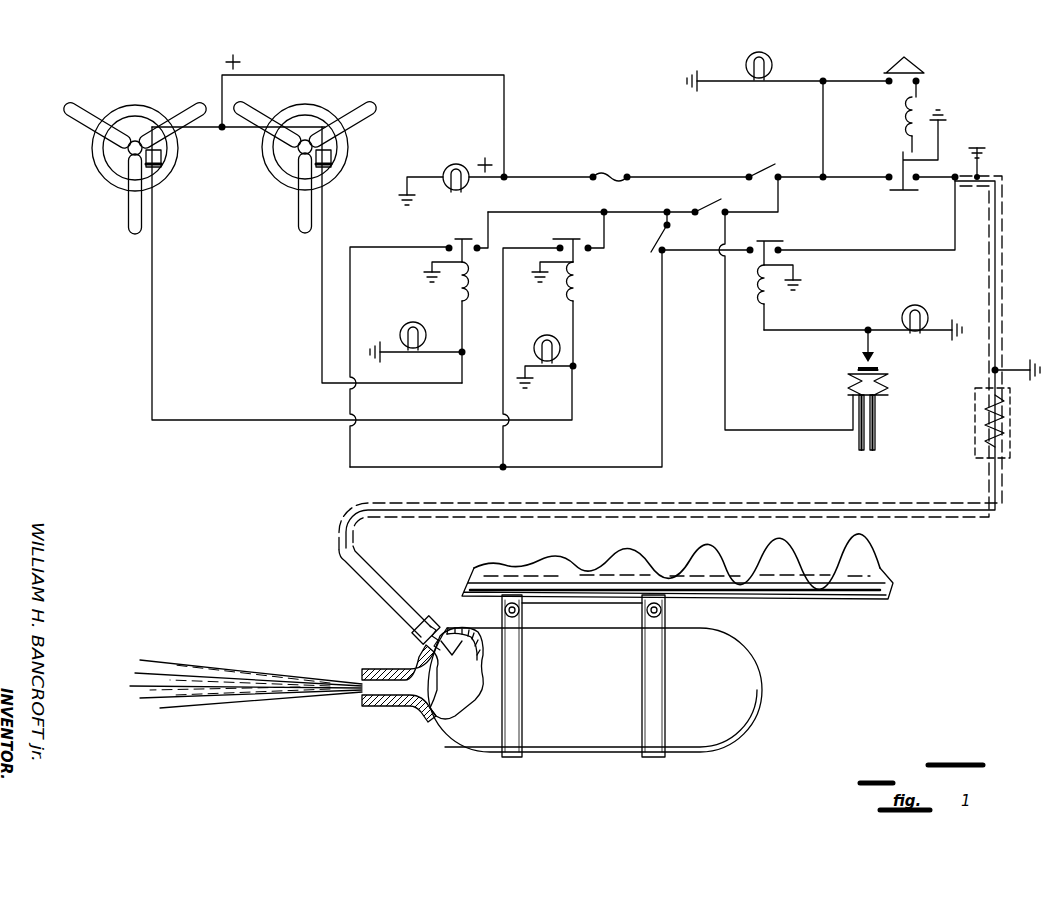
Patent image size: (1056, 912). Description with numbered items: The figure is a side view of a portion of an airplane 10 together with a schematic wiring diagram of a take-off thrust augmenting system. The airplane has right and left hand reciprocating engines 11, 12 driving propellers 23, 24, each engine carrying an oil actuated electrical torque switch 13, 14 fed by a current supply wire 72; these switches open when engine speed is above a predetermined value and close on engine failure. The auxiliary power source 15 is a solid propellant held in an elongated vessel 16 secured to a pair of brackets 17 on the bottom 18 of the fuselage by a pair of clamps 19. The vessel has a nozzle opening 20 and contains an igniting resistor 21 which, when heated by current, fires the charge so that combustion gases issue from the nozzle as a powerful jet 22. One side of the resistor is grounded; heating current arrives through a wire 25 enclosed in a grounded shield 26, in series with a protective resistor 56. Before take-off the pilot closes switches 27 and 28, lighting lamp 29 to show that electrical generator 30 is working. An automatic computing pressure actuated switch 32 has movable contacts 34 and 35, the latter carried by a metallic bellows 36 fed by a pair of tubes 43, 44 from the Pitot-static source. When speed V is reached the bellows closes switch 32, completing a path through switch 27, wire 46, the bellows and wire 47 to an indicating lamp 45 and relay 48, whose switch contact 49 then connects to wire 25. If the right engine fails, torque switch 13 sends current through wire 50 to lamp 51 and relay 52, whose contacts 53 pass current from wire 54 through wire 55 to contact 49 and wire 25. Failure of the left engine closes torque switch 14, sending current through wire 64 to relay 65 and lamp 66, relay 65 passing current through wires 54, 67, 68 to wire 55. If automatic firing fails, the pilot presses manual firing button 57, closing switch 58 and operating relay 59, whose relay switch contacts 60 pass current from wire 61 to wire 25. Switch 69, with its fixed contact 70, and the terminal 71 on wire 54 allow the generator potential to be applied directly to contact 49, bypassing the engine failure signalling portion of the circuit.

The airplane 10 is at (885, 588).
The right hand reciprocating engine 11 is at (103, 153).
The left hand reciprocating engine 12 is at (272, 152).
The oil actuated electrical torque switch 13 is at (162, 159).
The oil actuated electrical torque switch 14 is at (333, 162).
The auxiliary power source 15 is at (578, 733).
The elongated vessel 16 is at (543, 757).
The brackets 17 is at (643, 603).
The bottom of the airplane fuselage 18 is at (780, 598).
The clamps 19 is at (647, 678).
The nozzle opening 20 is at (361, 707).
The igniting resistor 21 is at (437, 648).
The jet 22 is at (362, 672).
The propeller 23 is at (128, 218).
The propeller 24 is at (298, 223).
The wire 25 is at (888, 249).
The grounded shield 26 is at (1003, 313).
The switch 27 is at (769, 172).
The switch 28 is at (710, 201).
The lamp 29 is at (770, 64).
The electrical generator 30 is at (448, 167).
The automatic computing pressure actuated switch 32 is at (856, 359).
The movable contact 34 is at (875, 357).
The movable contact 35 is at (880, 369).
The metallic bellows 36 is at (887, 392).
The tube 43 is at (858, 444).
The tube 44 is at (877, 445).
The indicating lamp 45 is at (936, 306).
The wire 46 is at (722, 376).
The wire 47 is at (800, 335).
The relay 48 is at (757, 315).
The switch contact 49 is at (752, 246).
The wire 50 is at (150, 366).
The lamp 51 is at (536, 335).
The relay 52 is at (578, 292).
The contacts 53 is at (573, 231).
The wire 54 is at (650, 212).
The wire 55 is at (583, 467).
The protective resistor 56 is at (1005, 441).
The manual firing button 57 is at (908, 61).
The switch 58 is at (895, 99).
The relay 59 is at (894, 140).
The relay switch contacts 60 is at (889, 196).
The wire 61 is at (847, 185).
The wire 64 is at (317, 393).
The relay 65 is at (466, 305).
The lamp 66 is at (405, 325).
The wire 67 is at (481, 227).
The wire 68 is at (384, 247).
The switch 69 is at (659, 243).
The fixed contact 70 is at (665, 254).
The terminal 71 is at (668, 210).
The current supply wire 72 is at (291, 75).